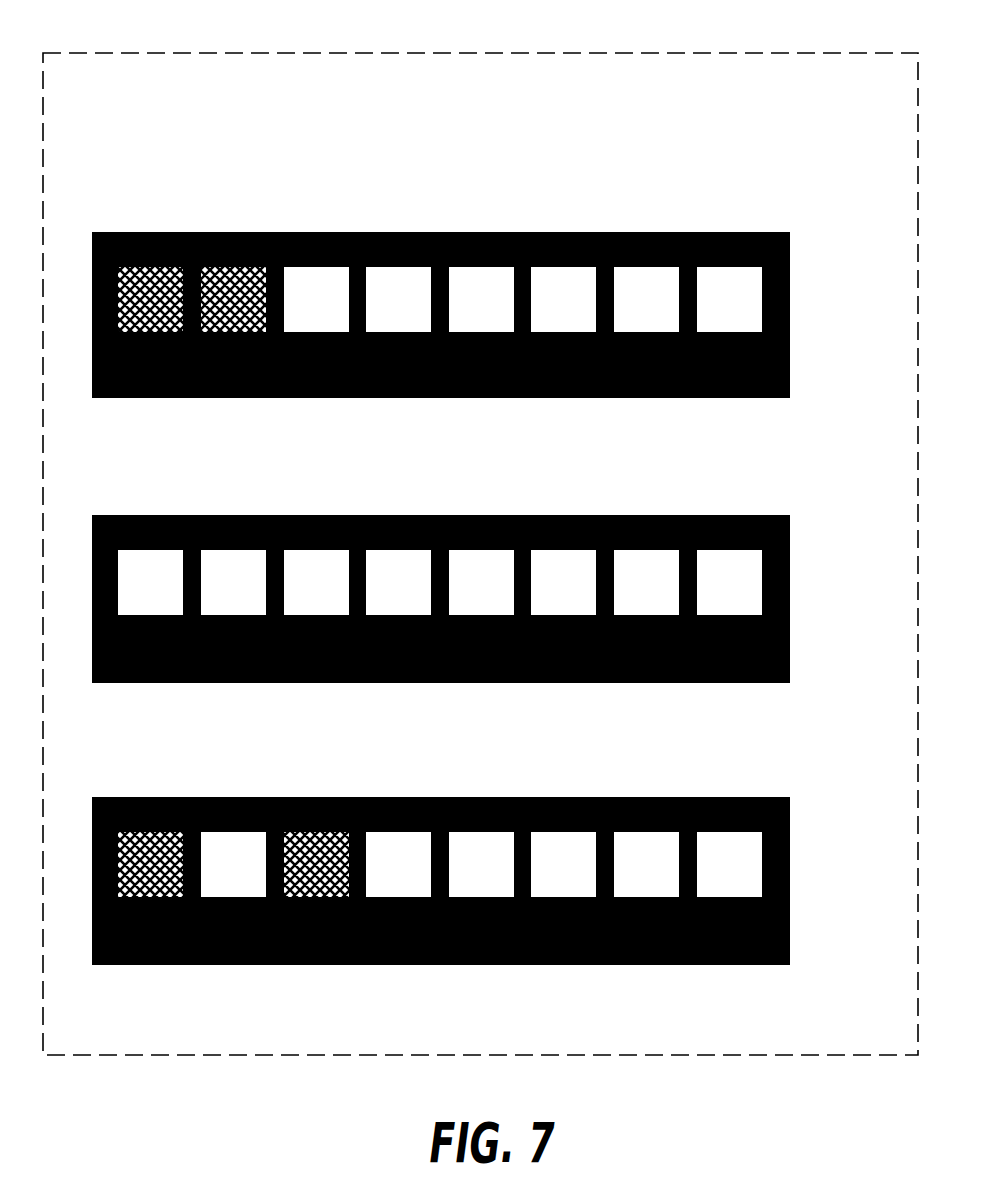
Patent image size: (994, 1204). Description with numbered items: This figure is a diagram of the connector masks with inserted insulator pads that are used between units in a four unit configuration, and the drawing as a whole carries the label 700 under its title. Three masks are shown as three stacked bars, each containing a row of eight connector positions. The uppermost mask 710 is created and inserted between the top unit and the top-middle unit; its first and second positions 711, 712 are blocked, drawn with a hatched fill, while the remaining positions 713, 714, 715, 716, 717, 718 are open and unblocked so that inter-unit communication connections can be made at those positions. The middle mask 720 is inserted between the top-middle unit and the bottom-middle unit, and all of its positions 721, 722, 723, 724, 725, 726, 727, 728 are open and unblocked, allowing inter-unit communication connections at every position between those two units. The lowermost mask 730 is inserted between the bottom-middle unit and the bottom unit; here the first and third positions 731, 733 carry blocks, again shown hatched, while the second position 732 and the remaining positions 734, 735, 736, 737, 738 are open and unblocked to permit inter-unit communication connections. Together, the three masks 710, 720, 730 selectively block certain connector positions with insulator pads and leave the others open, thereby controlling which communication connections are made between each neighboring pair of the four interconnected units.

The masks to use between units in four unit configuration 700 is at (468, 111).
The mask 710 is at (709, 212).
The first position 711 is at (136, 302).
The second position 712 is at (219, 302).
The position 713 is at (302, 302).
The position 714 is at (384, 302).
The position 715 is at (467, 302).
The position 716 is at (549, 302).
The position 717 is at (632, 302).
The position 718 is at (715, 302).
The mask 720 is at (709, 495).
The position 721 is at (136, 593).
The position 722 is at (219, 593).
The position 723 is at (302, 593).
The position 724 is at (384, 593).
The position 725 is at (467, 593).
The position 726 is at (549, 593).
The position 727 is at (632, 593).
The position 728 is at (715, 593).
The mask 730 is at (709, 777).
The first position 731 is at (136, 867).
The position 732 is at (219, 867).
The third position 733 is at (302, 867).
The position 734 is at (384, 867).
The position 735 is at (467, 867).
The position 736 is at (549, 867).
The position 737 is at (632, 867).
The position 738 is at (715, 867).